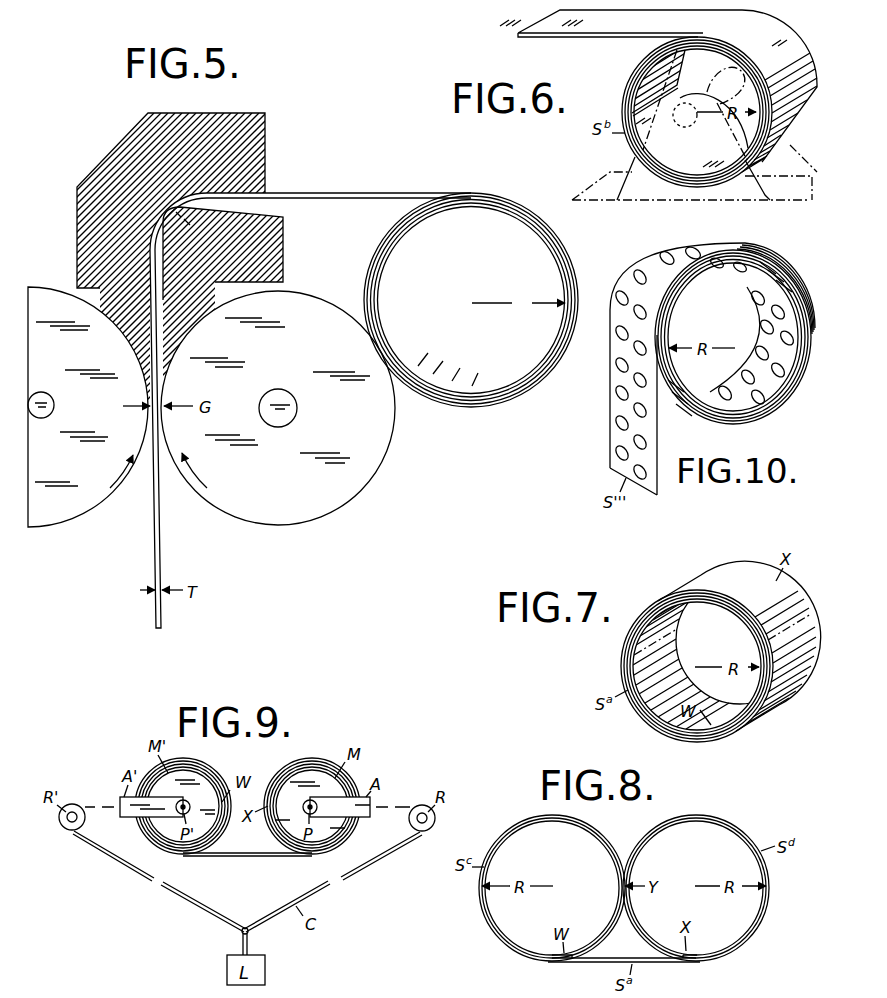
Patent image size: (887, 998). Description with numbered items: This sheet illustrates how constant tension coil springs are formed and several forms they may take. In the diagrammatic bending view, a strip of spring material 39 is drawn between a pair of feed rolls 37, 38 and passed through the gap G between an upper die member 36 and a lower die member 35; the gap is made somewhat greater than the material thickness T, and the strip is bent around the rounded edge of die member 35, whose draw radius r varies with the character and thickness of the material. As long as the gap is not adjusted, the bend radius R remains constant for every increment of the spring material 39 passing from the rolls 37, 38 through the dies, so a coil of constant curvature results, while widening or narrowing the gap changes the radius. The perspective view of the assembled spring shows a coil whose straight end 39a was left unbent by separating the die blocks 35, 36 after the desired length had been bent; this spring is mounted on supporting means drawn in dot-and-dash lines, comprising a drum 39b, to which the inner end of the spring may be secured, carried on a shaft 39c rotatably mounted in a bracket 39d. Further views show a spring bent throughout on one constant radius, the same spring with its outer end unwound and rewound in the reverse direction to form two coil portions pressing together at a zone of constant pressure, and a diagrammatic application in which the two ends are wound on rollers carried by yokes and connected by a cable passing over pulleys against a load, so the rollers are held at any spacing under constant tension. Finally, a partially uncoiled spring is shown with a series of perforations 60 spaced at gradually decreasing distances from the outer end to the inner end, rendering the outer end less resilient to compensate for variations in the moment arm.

In FIG. 5, the die member 35 is at (284, 249).
In FIG. 5, the die member 36 is at (242, 117).
In FIG. 5, the feed roll 37 is at (372, 468).
In FIG. 5, the feed roll 38 is at (63, 519).
In FIG. 5, the spring material 39 is at (162, 545).
In FIG. 6, the end of spring material 39a is at (533, 26).
In FIG. 6, the drum 39b is at (643, 80).
In FIG. 6, the shaft 39c is at (683, 128).
In FIG. 6, the bracket 39d is at (588, 186).
In FIG. 10, the perforations 60 is at (693, 250).